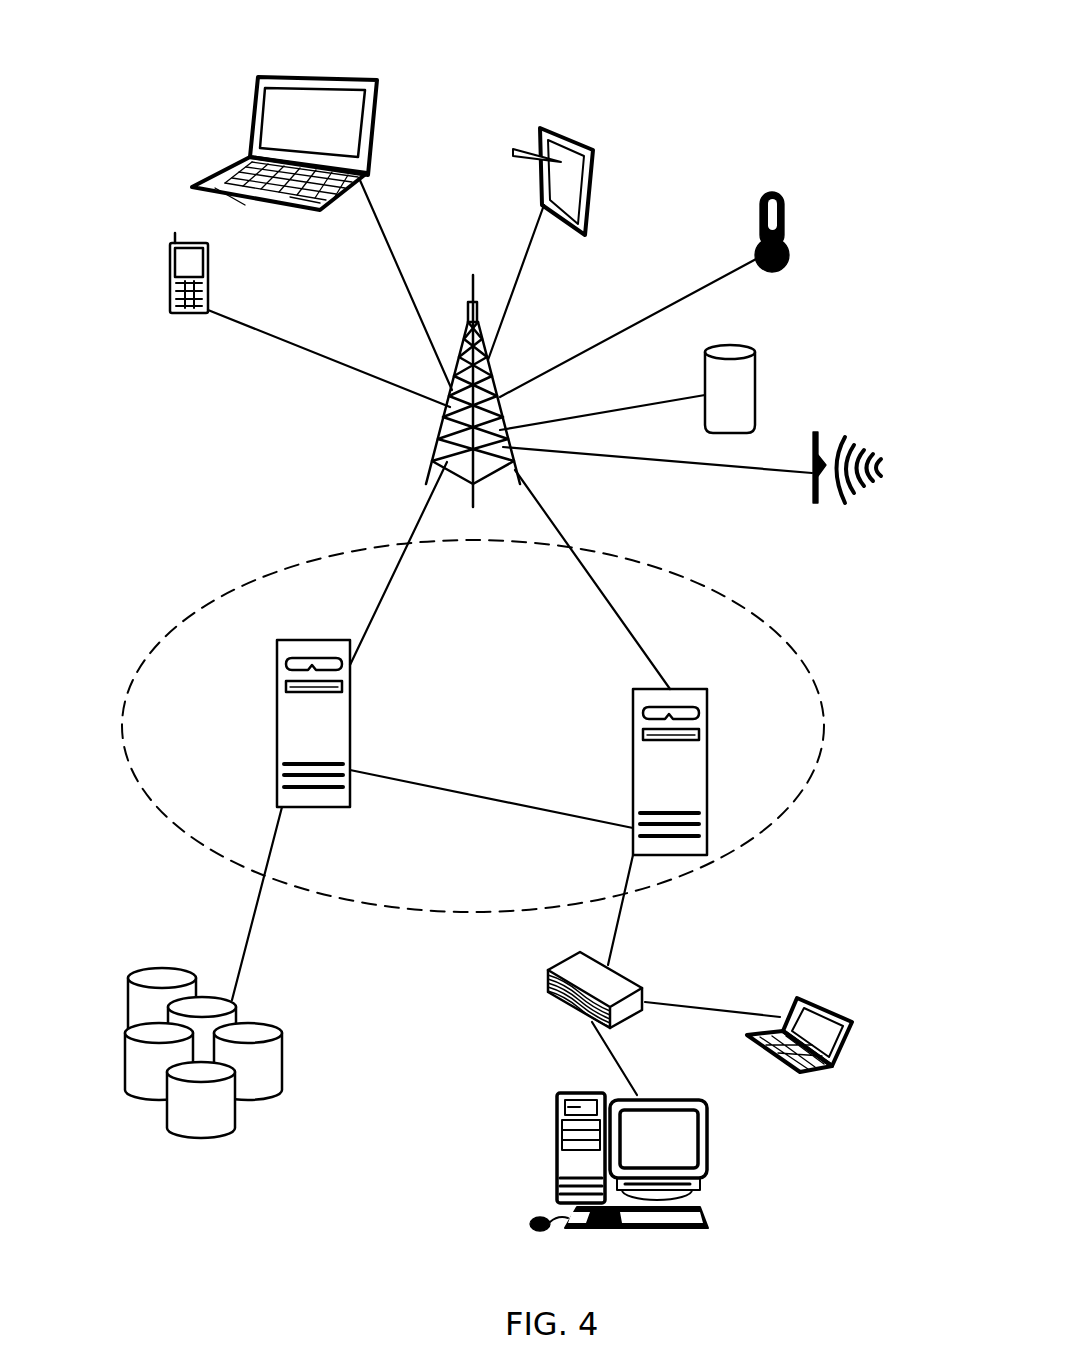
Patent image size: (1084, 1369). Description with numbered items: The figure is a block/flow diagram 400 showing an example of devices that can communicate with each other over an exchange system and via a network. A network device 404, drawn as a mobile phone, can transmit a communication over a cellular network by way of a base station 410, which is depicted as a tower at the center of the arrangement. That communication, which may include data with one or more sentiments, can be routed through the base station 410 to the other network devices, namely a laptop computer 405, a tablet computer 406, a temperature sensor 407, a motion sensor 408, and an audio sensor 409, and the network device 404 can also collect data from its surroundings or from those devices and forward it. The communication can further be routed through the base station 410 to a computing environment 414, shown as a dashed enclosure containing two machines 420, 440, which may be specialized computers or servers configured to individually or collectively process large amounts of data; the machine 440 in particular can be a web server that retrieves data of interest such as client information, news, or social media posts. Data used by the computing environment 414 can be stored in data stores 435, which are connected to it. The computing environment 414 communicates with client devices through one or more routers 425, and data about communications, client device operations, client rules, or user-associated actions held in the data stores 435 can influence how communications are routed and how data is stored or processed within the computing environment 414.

The block/flow diagram 400 is at (352, 36).
The network device 404 is at (171, 252).
The network device 405 is at (253, 112).
The network device 406 is at (572, 130).
The network device 407 is at (784, 220).
The network device 408 is at (757, 372).
The network device 409 is at (843, 436).
The base station 410 is at (472, 282).
The computing environment 414 is at (247, 558).
The machine 420 is at (633, 710).
The router 425 is at (568, 956).
The data store 435 is at (140, 972).
The machine 440 is at (350, 727).